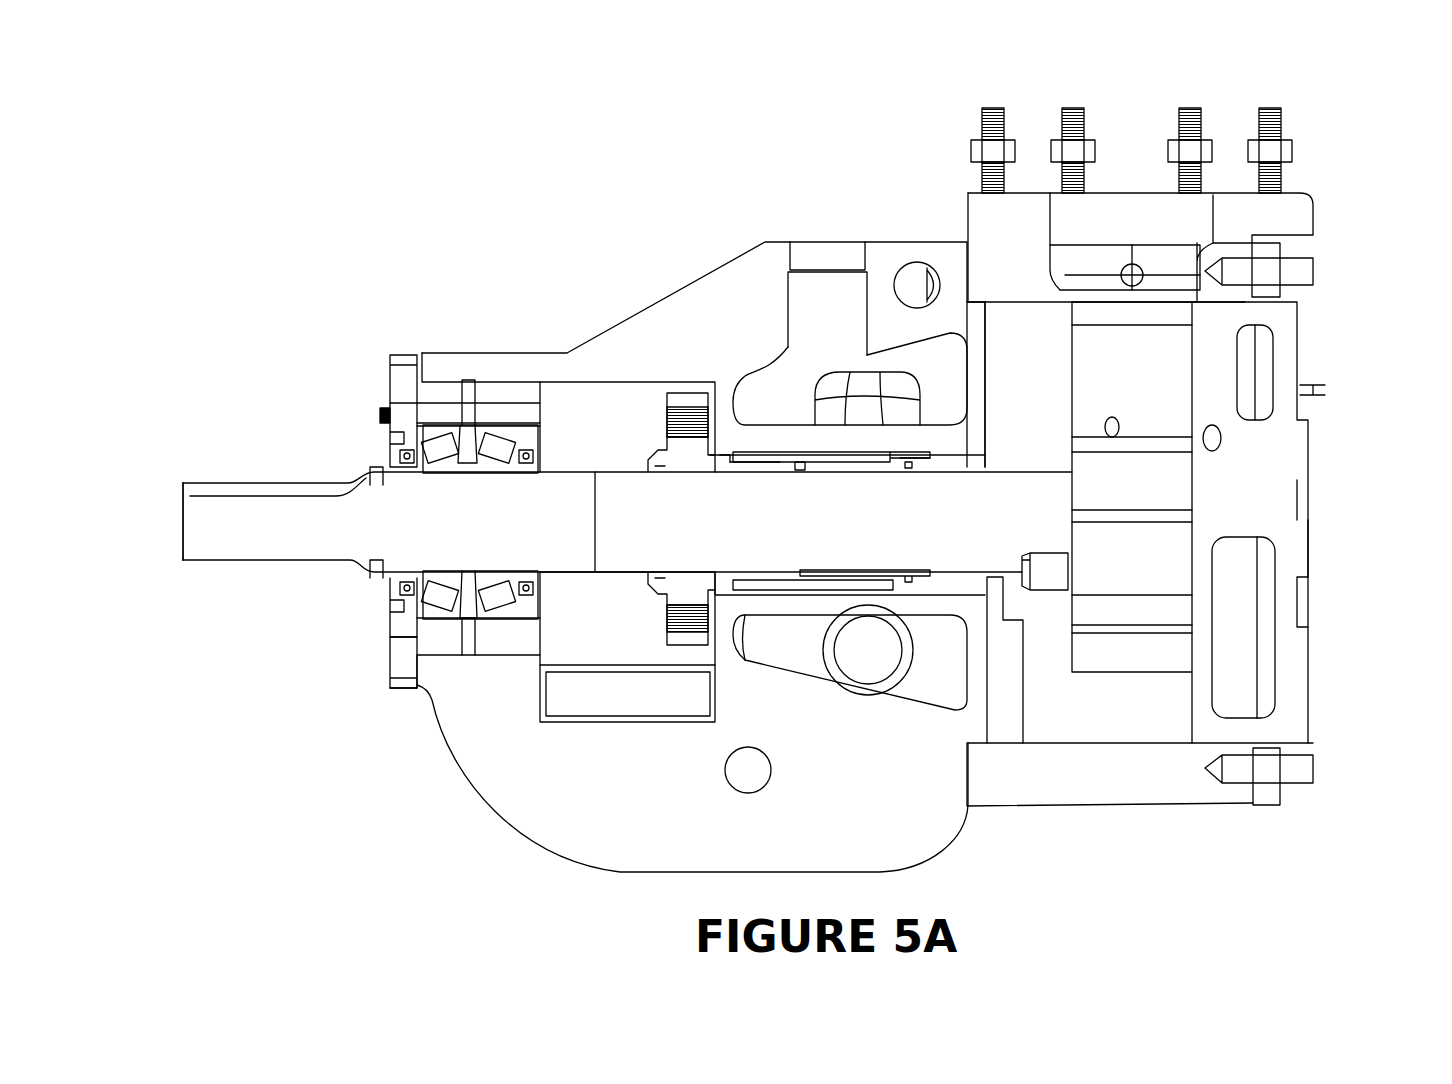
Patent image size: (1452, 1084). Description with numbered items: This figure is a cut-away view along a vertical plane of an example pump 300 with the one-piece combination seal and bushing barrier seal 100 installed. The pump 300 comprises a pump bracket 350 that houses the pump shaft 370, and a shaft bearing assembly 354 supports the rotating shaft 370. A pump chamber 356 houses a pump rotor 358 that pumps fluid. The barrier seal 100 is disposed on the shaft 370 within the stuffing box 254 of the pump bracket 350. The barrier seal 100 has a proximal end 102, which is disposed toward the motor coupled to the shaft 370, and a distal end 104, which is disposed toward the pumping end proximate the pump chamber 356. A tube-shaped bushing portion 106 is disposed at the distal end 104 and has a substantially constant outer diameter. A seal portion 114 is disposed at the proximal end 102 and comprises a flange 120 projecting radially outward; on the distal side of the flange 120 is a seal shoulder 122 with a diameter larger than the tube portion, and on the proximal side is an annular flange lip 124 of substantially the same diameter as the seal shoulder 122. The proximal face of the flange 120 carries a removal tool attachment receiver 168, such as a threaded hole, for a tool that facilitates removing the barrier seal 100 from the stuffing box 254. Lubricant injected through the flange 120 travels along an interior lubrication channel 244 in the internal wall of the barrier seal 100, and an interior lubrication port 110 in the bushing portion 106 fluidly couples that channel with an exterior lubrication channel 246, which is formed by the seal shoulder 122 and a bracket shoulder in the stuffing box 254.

The pump 300 is at (215, 125).
The pump shaft 370 is at (205, 512).
The proximal end 102 is at (245, 603).
The distal end 104 is at (1325, 360).
The shaft bearing assembly 354 is at (385, 345).
The bushing portion 106 is at (925, 445).
The barrier seal 100 is at (680, 375).
The removal tool attachment receiver 168 is at (665, 428).
The annular flange lip 124 is at (655, 465).
The flange 120 is at (667, 636).
The seal shoulder 122 is at (745, 455).
The interior lubrication port 110 is at (800, 470).
The exterior lubrication channel 246 is at (875, 457).
The interior lubrication channel 244 is at (827, 575).
The seal portion 114 is at (733, 598).
The pump bracket 350 is at (935, 820).
The stuffing box 254 is at (880, 598).
The pump rotor 358 is at (1160, 313).
The pump chamber 356 is at (1305, 172).